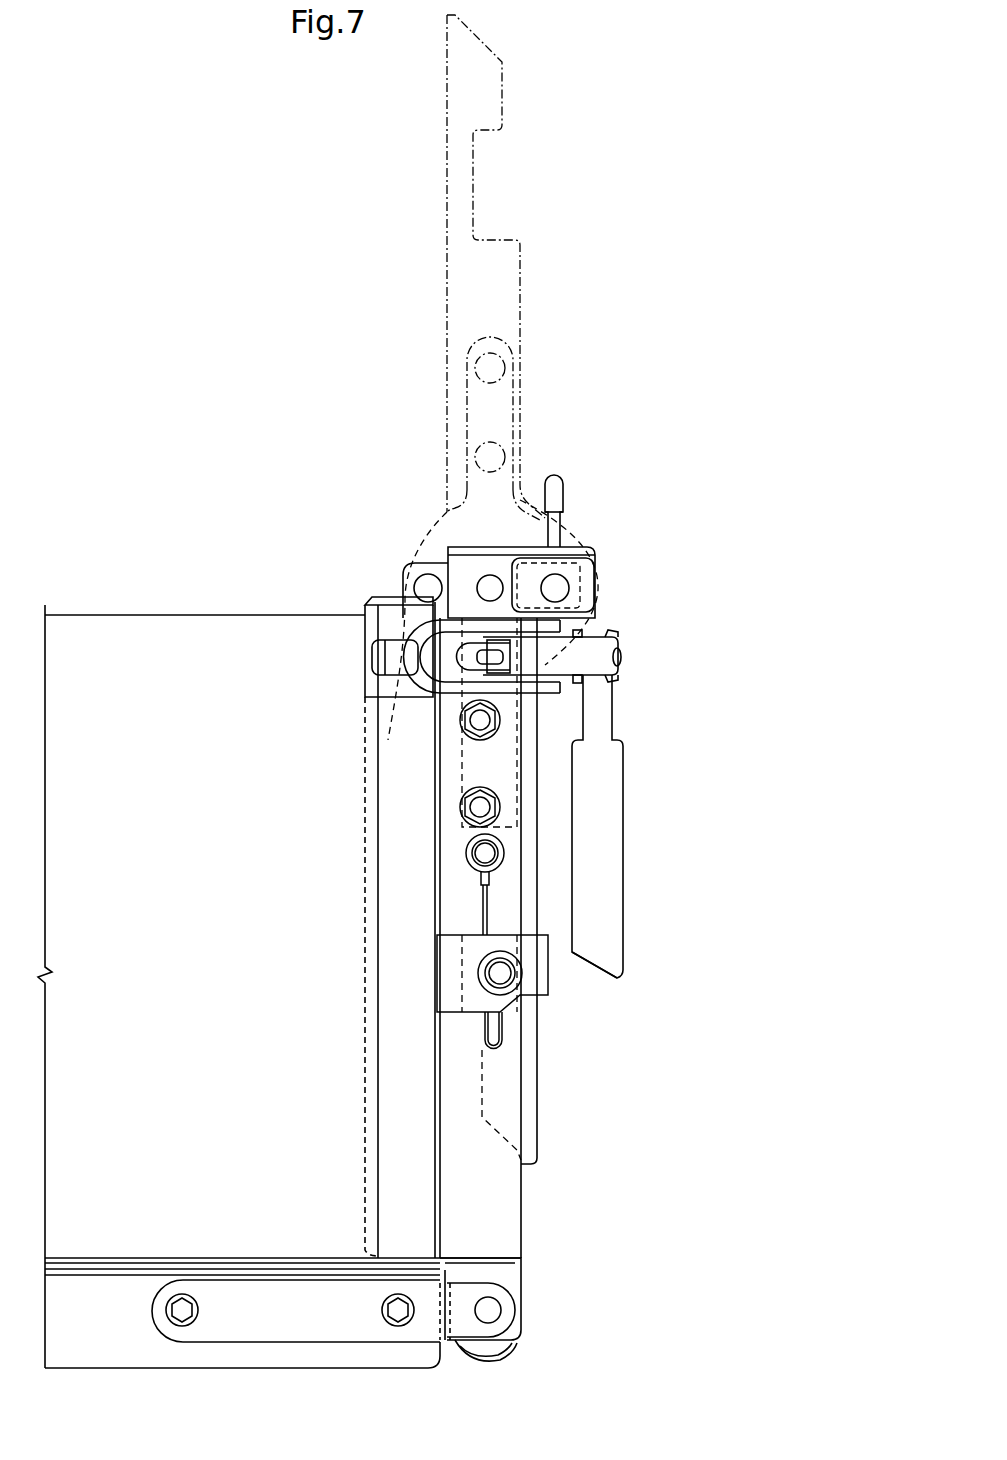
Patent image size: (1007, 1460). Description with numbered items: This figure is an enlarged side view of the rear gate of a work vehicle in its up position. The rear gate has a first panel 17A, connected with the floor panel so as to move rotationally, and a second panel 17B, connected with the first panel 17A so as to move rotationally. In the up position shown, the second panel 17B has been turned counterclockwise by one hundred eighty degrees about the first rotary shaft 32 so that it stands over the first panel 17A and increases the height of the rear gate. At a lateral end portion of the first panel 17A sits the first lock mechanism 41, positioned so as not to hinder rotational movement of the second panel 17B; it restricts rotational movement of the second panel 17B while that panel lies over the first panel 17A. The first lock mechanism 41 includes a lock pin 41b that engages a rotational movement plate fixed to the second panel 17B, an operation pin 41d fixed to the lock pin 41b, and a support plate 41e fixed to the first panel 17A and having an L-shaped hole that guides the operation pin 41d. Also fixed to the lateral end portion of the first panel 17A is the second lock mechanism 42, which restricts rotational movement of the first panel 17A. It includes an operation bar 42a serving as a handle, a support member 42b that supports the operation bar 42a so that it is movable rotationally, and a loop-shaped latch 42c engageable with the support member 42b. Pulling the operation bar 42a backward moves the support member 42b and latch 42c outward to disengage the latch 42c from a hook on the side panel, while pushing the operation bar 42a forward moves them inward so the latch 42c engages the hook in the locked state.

The first panel 17A is at (500, 1215).
The second panel 17B is at (522, 308).
The first rotary shaft 32 is at (490, 585).
The first lock mechanism 41 is at (542, 516).
The lock pin 41b is at (558, 587).
The operation pin 41d is at (553, 478).
The support plate 41e is at (592, 590).
The second lock mechanism 42 is at (642, 866).
The operation bar 42a is at (593, 950).
The support member 42b is at (597, 652).
The loop-shaped latch 42c is at (422, 682).